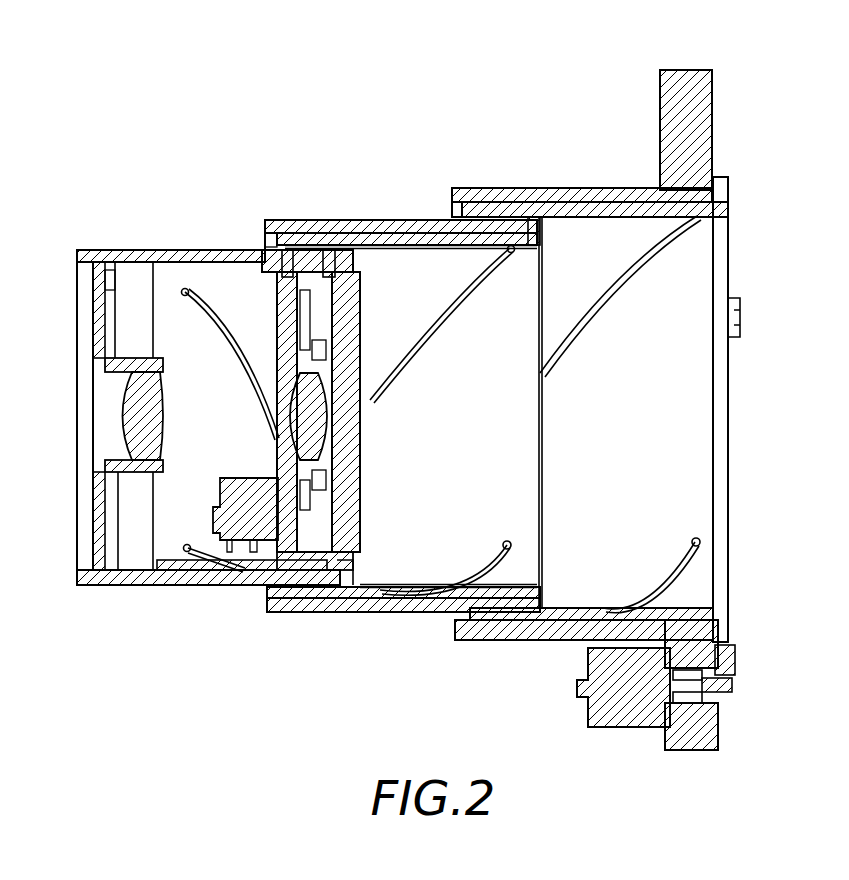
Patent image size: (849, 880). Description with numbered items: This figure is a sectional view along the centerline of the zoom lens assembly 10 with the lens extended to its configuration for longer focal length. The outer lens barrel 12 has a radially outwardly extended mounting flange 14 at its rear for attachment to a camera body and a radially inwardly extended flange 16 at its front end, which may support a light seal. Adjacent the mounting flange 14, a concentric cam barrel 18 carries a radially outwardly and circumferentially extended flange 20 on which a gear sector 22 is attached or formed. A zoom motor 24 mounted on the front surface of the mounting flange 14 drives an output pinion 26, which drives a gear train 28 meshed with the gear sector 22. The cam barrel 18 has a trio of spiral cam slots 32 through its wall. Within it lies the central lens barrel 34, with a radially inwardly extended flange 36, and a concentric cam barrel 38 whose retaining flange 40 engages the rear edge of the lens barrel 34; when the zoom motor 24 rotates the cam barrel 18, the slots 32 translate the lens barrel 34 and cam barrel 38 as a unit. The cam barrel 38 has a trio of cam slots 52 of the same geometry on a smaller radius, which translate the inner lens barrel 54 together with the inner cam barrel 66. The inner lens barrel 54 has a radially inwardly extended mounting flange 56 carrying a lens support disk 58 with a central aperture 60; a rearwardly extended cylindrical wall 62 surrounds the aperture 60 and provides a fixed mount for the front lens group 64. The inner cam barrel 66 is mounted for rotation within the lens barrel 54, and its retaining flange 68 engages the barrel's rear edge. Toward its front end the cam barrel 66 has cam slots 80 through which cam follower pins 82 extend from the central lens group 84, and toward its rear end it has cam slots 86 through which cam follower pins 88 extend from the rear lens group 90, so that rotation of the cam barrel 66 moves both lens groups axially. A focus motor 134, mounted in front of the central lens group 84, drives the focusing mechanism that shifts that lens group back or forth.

The zoom lens assembly 10 is at (163, 665).
The outer lens barrel 12 is at (470, 188).
The mounting flange 14 is at (690, 68).
The radially inwardly extended flange 16 is at (455, 190).
The cam barrel 18 is at (617, 217).
The flange 20 is at (727, 178).
The gear sector 22 is at (735, 647).
The zoom motor 24 is at (577, 692).
The output pinion 26 is at (718, 703).
The gear train 28 is at (768, 673).
The cam slots 32 is at (588, 325).
The central lens barrel 34 is at (352, 222).
The radially inwardly extended flange 36 is at (262, 224).
The cam barrel 38 is at (417, 242).
The retaining flange 40 is at (543, 232).
The cam slots 52 is at (433, 330).
The inner lens barrel 54 is at (117, 250).
The mounting flange 56 is at (113, 293).
The lens support disk 58 is at (88, 313).
The central aperture 60 is at (95, 388).
The cylindrical wall 62 is at (110, 462).
The front lens group 64 is at (120, 417).
The inner cam barrel 66 is at (220, 277).
The retaining flange 68 is at (352, 262).
The cam slots 80 is at (240, 362).
The cam follower pins 82 is at (288, 250).
The central lens group 84 is at (283, 408).
The cam slots 86 is at (290, 567).
The cam follower pins 88 is at (330, 250).
The rear lens group 90 is at (360, 455).
The focus motor 134 is at (242, 545).